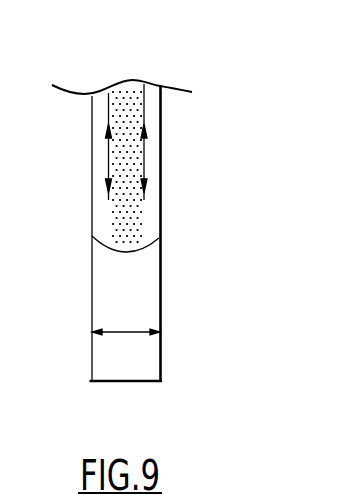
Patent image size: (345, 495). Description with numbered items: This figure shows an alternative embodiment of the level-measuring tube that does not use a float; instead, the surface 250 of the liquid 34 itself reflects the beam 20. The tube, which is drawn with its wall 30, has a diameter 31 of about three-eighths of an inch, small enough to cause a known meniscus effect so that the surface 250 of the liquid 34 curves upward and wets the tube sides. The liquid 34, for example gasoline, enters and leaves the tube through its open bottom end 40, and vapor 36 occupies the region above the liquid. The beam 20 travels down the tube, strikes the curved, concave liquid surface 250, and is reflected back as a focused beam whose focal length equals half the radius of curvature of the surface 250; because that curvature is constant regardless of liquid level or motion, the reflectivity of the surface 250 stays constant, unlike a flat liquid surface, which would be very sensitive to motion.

The beam 20 is at (113, 168).
The vapor 36 is at (150, 157).
The liquid surface 250 is at (151, 246).
The liquid 34 is at (102, 275).
The heat pipe tube 30 is at (161, 285).
The diameter 31 is at (122, 330).
The bottom end 40 is at (147, 380).